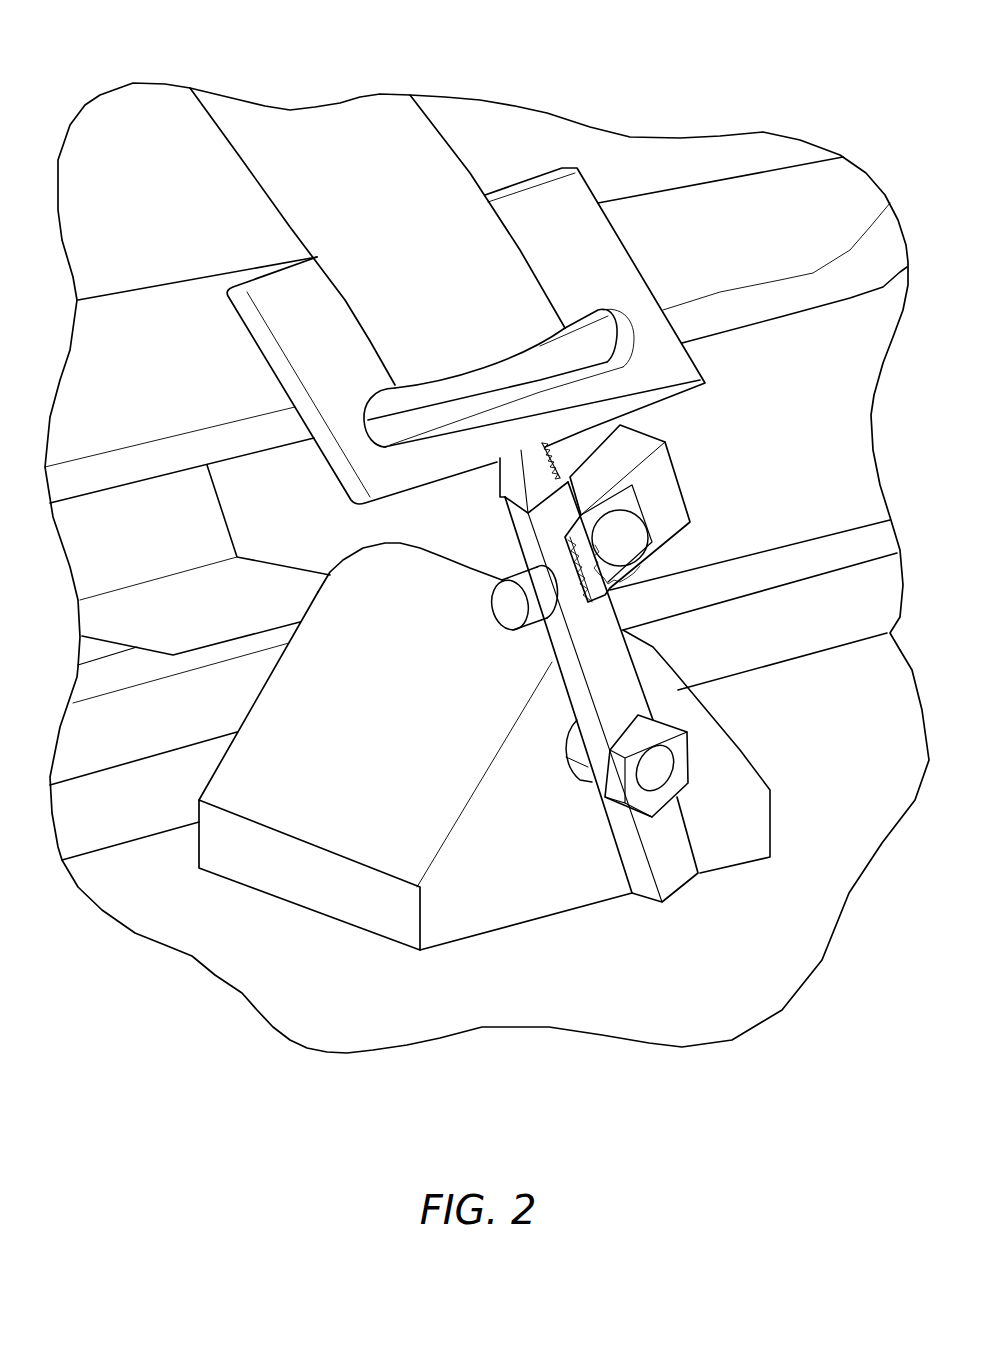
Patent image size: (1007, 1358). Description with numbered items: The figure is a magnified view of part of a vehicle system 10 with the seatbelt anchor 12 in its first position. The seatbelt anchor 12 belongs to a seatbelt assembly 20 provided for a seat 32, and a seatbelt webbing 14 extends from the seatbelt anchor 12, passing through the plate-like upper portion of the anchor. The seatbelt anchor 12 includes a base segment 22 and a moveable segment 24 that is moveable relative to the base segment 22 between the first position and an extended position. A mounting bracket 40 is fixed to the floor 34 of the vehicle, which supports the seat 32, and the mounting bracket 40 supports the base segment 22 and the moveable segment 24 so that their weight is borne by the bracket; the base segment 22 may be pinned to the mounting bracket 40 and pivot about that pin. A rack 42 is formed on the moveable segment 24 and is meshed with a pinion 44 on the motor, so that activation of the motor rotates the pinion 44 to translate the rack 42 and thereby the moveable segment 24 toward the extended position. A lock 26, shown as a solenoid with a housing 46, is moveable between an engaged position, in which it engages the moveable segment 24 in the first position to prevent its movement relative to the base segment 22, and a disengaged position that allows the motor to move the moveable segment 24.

The system 10 is at (566, 850).
The seatbelt anchor 12 is at (554, 716).
The seatbelt webbing 14 is at (452, 148).
The seatbelt assembly 20 is at (241, 203).
The base segment 22 is at (683, 887).
The moveable segment 24 is at (505, 475).
The lock 26 is at (490, 603).
The seat 32 is at (878, 169).
The floor 34 is at (345, 999).
The mounting bracket 40 is at (572, 907).
The rack 42 is at (558, 440).
The pinion 44 is at (623, 517).
The housing 46 is at (510, 625).